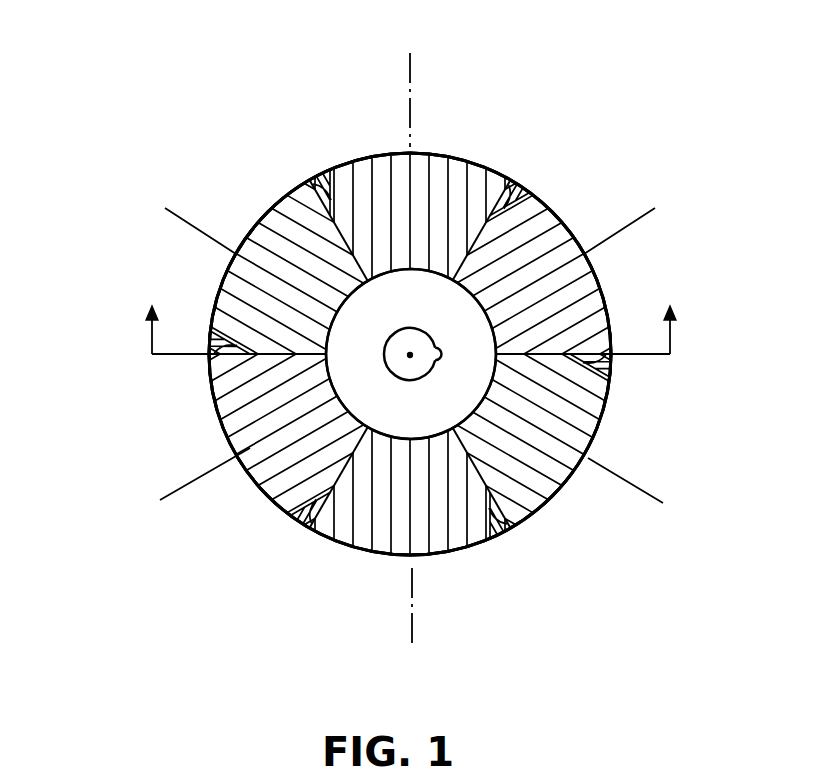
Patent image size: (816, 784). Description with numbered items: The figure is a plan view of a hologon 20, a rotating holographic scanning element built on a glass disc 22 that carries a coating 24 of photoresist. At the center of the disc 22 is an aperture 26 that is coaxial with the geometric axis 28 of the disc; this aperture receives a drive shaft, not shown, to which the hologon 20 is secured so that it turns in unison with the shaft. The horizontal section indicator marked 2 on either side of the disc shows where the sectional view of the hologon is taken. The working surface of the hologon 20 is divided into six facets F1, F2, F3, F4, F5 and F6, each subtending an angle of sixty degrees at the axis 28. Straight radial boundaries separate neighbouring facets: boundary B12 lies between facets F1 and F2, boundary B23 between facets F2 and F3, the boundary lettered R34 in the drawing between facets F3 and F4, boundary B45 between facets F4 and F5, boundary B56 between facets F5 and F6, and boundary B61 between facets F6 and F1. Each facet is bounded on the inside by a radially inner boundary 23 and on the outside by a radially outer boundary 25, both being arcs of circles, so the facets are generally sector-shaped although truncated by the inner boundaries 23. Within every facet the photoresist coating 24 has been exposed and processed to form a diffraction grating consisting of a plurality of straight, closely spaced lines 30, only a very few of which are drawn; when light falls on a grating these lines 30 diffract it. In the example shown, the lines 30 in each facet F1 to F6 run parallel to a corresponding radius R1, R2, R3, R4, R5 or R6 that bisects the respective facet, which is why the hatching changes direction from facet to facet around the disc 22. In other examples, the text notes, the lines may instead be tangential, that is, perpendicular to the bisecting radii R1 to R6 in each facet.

The hologon 20 is at (146, 258).
The glass disc 22 is at (373, 377).
The radially inner boundary 23 is at (394, 270).
The coating of photoresist 24 is at (574, 240).
The radially outer boundary 25 is at (440, 153).
The aperture 26 is at (437, 353).
The geometric axis 28 is at (411, 358).
The lines 30 is at (300, 206).
The section line 2- 2 is at (410, 345).
The facet F1 is at (382, 153).
The facet F2 is at (588, 255).
The facet F3 is at (565, 458).
The facet F4 is at (419, 540).
The facet F5 is at (243, 456).
The facet F6 is at (248, 247).
The radial boundary B61 is at (326, 178).
The radial boundary B12 is at (515, 186).
The radial boundary B23 is at (608, 340).
The radial boundary R34 is at (520, 528).
The radial boundary B45 is at (325, 530).
The radial boundary B56 is at (210, 334).
The bisecting radius R1 is at (411, 73).
The bisecting radius R2 is at (655, 208).
The bisecting radius R3 is at (663, 503).
The bisecting radius R4 is at (412, 617).
The bisecting radius R5 is at (160, 500).
The bisecting radius R6 is at (165, 208).